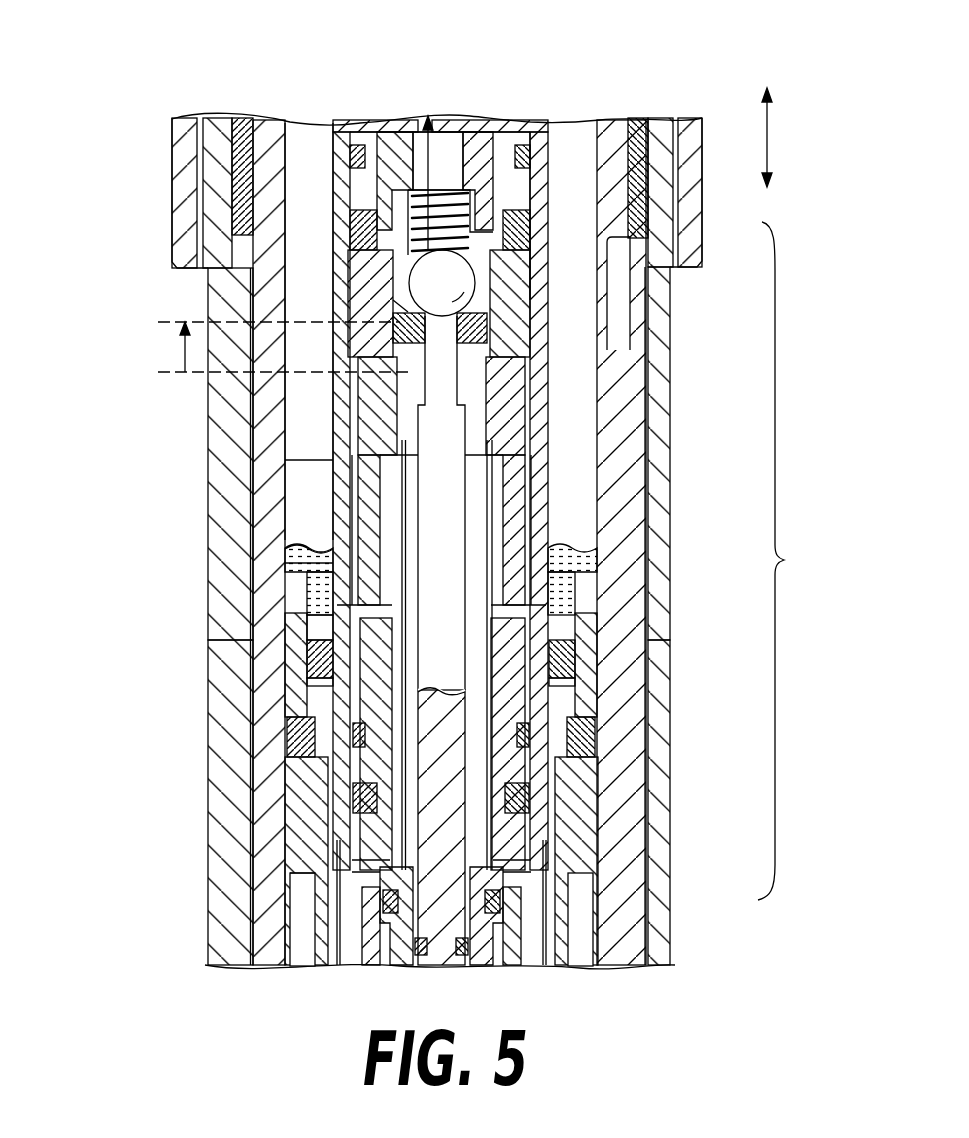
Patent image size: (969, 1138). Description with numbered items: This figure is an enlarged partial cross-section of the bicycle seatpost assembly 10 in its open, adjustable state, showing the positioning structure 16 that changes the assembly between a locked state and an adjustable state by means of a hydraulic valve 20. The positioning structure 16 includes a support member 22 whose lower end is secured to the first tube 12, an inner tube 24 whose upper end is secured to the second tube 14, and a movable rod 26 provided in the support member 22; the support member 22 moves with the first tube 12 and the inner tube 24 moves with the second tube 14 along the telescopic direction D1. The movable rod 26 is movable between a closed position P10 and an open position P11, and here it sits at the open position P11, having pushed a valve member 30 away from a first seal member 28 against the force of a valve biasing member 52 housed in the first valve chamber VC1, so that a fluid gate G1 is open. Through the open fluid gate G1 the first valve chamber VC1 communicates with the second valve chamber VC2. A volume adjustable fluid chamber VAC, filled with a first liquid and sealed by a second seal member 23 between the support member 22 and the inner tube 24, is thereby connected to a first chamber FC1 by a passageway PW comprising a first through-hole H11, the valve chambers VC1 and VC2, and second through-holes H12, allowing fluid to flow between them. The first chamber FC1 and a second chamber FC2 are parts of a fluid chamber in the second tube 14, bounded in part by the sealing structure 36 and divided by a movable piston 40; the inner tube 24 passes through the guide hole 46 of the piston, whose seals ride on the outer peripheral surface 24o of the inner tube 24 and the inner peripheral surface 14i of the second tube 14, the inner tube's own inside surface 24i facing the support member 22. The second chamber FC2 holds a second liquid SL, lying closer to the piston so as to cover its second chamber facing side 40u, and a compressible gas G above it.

The bicycle seatpost assembly 10 is at (704, 80).
The first tube 12 is at (690, 944).
The second tube 14 is at (612, 105).
The inner peripheral surface 14i is at (290, 122).
The positioning structure 16 is at (785, 561).
The hydraulic valve 20 is at (484, 399).
The support member 22 is at (530, 457).
The second seal member 23 is at (530, 220).
The inner tube 24 is at (612, 625).
The inner peripheral surface of the inner tube 24i is at (524, 124).
The outer peripheral surface 24o is at (325, 122).
The movable rod 26 is at (485, 699).
The first seal member 28 is at (460, 334).
The valve member 30 is at (460, 290).
The sealing structure 36 is at (582, 907).
The movable piston 40 is at (587, 552).
The second chamber facing side 40u is at (307, 550).
The guide hole 46 is at (560, 815).
The valve biasing member 52 is at (445, 190).
The telescopic direction D1 is at (772, 132).
The first chamber FC1 is at (300, 910).
The second chamber FC2 is at (120, 460).
The gas G is at (303, 460).
The fluid gate G1 is at (408, 310).
The first through-hole H11 is at (422, 122).
The second through-hole H12 is at (352, 874).
The closed position P10 is at (170, 372).
The open position P11 is at (170, 322).
The passageway PW is at (403, 743).
The second liquid SL is at (303, 563).
The volume adjustable fluid chamber VAC is at (489, 123).
The first valve chamber VC1 is at (400, 242).
The second valve chamber VC2 is at (307, 607).